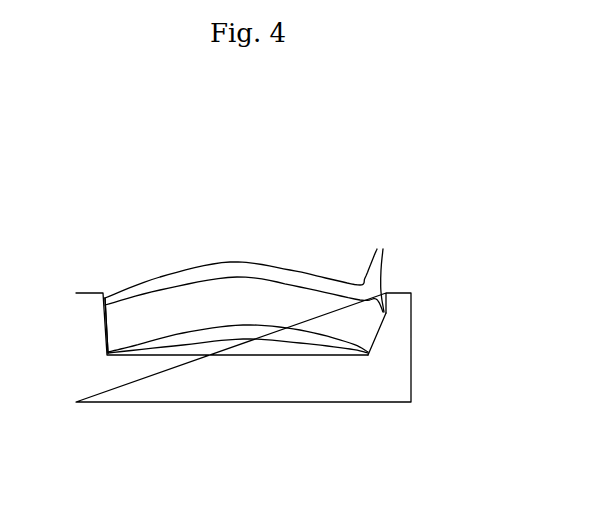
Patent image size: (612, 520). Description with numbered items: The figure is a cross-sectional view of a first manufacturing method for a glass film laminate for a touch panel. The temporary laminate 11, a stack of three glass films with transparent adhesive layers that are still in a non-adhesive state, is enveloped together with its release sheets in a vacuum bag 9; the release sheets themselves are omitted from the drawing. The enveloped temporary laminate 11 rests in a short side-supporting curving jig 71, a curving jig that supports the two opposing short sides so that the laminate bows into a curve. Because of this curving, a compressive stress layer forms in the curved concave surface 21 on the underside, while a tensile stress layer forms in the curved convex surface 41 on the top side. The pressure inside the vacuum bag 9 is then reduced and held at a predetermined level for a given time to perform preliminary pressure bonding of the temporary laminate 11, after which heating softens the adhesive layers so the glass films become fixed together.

The vacuum bag 9 is at (293, 267).
The temporary laminate 11 is at (130, 312).
The curved concave surface 21 is at (240, 330).
The curved convex surface 41 is at (217, 273).
The short side-supporting curving jig 71 is at (402, 302).